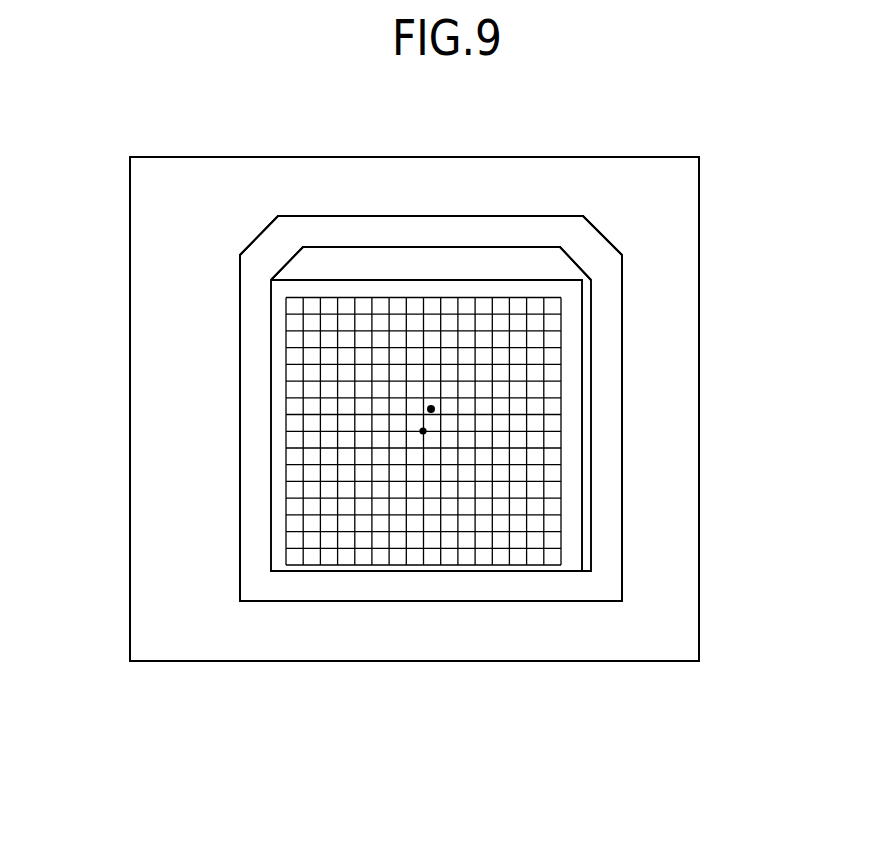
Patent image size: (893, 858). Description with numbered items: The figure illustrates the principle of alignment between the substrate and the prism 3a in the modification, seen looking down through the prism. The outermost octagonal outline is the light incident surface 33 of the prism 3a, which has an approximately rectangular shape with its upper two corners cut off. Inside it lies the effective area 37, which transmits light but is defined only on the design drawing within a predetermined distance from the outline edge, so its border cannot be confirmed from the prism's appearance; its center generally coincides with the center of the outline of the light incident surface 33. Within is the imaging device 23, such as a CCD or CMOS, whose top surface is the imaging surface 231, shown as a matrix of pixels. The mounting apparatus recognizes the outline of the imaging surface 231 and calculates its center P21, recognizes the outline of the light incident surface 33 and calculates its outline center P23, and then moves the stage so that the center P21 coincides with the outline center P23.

The prism 3a is at (503, 210).
The light incident surface 33 is at (607, 323).
The imaging device 23 is at (582, 365).
The effective area 37 is at (408, 262).
The imaging surface 231 is at (558, 409).
The center of the imaging surface P21 is at (423, 431).
The outline center of the light incident surface P23 is at (431, 409).